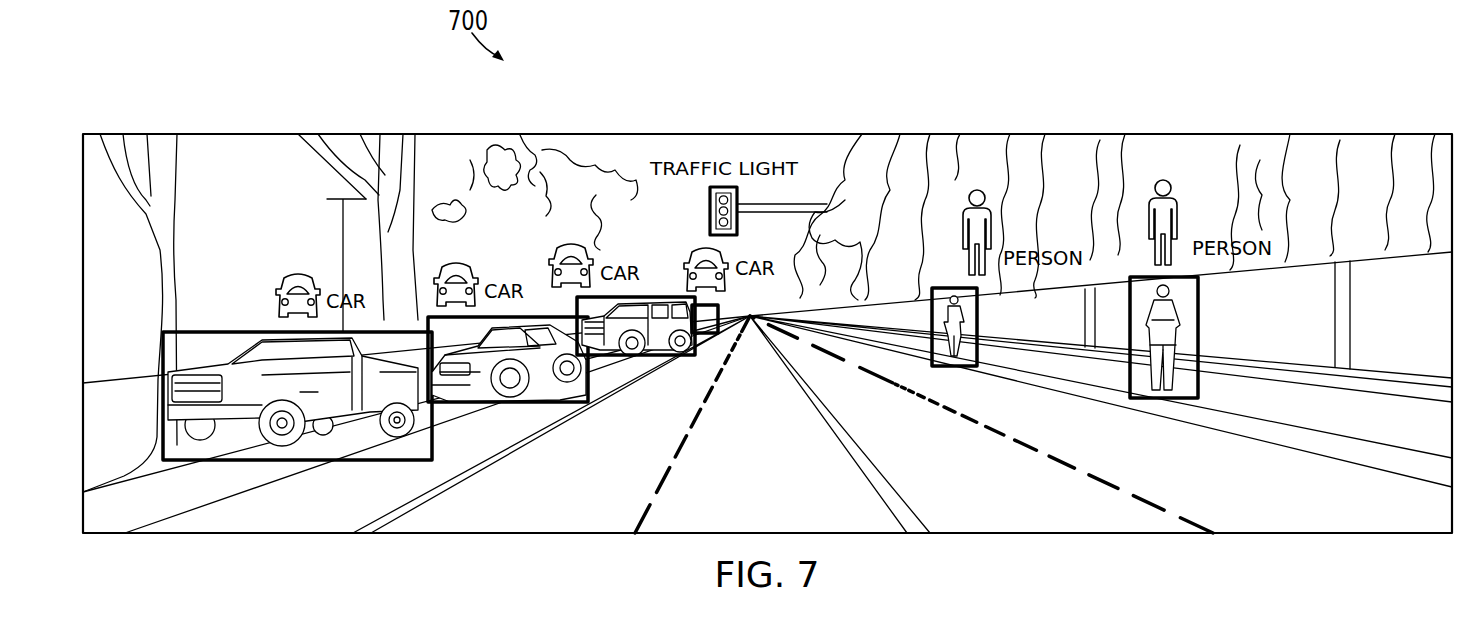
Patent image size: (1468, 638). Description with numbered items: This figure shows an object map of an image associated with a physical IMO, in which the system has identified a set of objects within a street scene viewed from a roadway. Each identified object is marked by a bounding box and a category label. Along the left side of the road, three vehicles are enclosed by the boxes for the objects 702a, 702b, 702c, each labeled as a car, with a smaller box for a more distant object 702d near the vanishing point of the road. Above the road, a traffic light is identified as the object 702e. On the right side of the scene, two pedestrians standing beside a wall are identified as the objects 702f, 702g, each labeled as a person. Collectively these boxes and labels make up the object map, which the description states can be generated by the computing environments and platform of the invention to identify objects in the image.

The object 702a is at (230, 330).
The object 702b is at (545, 316).
The object 702c is at (668, 297).
The object 702d is at (703, 333).
The object 702e is at (708, 220).
The object 702f is at (978, 327).
The object 702g is at (1199, 340).